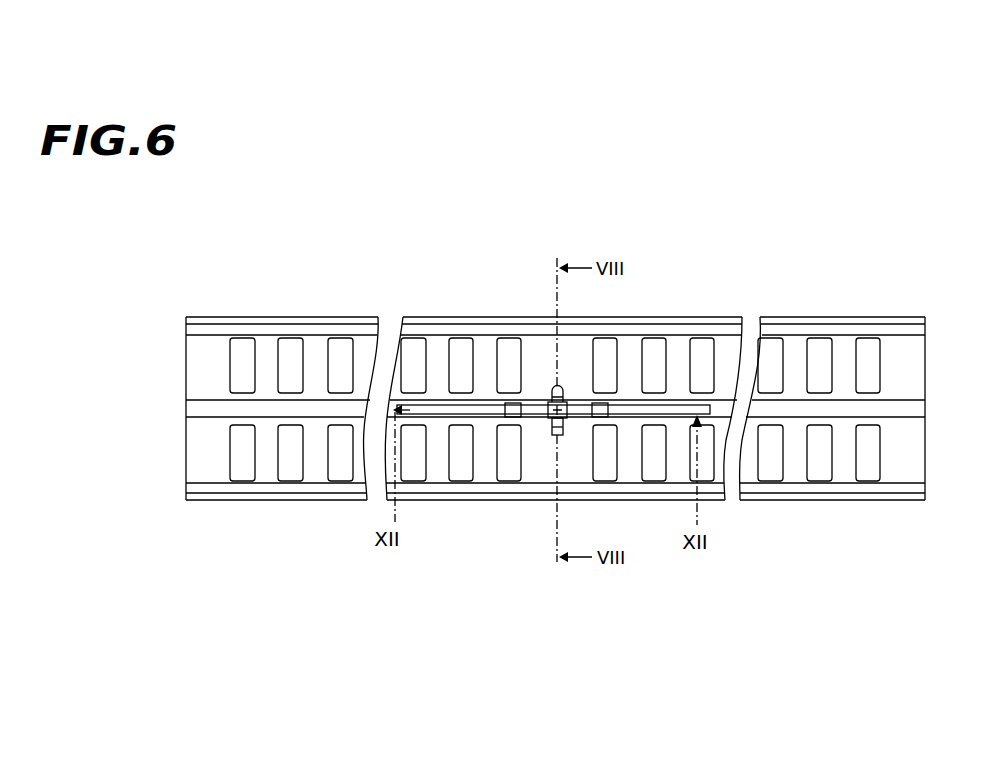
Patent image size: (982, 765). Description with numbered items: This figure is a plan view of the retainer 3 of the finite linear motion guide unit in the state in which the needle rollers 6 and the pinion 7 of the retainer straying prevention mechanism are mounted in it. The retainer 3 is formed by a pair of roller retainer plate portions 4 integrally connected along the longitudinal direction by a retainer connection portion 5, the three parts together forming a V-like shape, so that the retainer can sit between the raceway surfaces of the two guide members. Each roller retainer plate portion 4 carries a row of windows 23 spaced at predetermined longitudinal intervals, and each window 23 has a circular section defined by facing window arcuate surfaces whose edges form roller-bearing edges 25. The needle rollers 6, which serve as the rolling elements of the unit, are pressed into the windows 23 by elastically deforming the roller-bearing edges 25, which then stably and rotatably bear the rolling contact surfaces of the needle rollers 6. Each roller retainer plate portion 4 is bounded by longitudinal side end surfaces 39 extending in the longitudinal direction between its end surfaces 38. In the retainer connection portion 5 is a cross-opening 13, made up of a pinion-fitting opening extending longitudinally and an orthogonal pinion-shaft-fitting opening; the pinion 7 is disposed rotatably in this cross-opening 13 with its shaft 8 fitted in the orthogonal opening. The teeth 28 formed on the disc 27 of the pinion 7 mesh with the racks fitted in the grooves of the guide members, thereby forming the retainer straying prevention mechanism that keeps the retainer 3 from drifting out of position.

The retainer 3 is at (531, 416).
The roller retainer plate portion 4 is at (362, 357).
The retainer connection portion 5 is at (318, 405).
The needle roller 6 is at (500, 372).
The pinion 7 is at (538, 413).
The shaft 8 is at (548, 395).
The cross-opening 13 is at (567, 420).
The window 23 is at (285, 463).
The roller-bearing edge 25 is at (718, 363).
The disc 27 is at (577, 407).
The teeth 28 is at (510, 400).
The end surface 38 is at (186, 472).
The longitudinal side end surface 39 is at (822, 317).